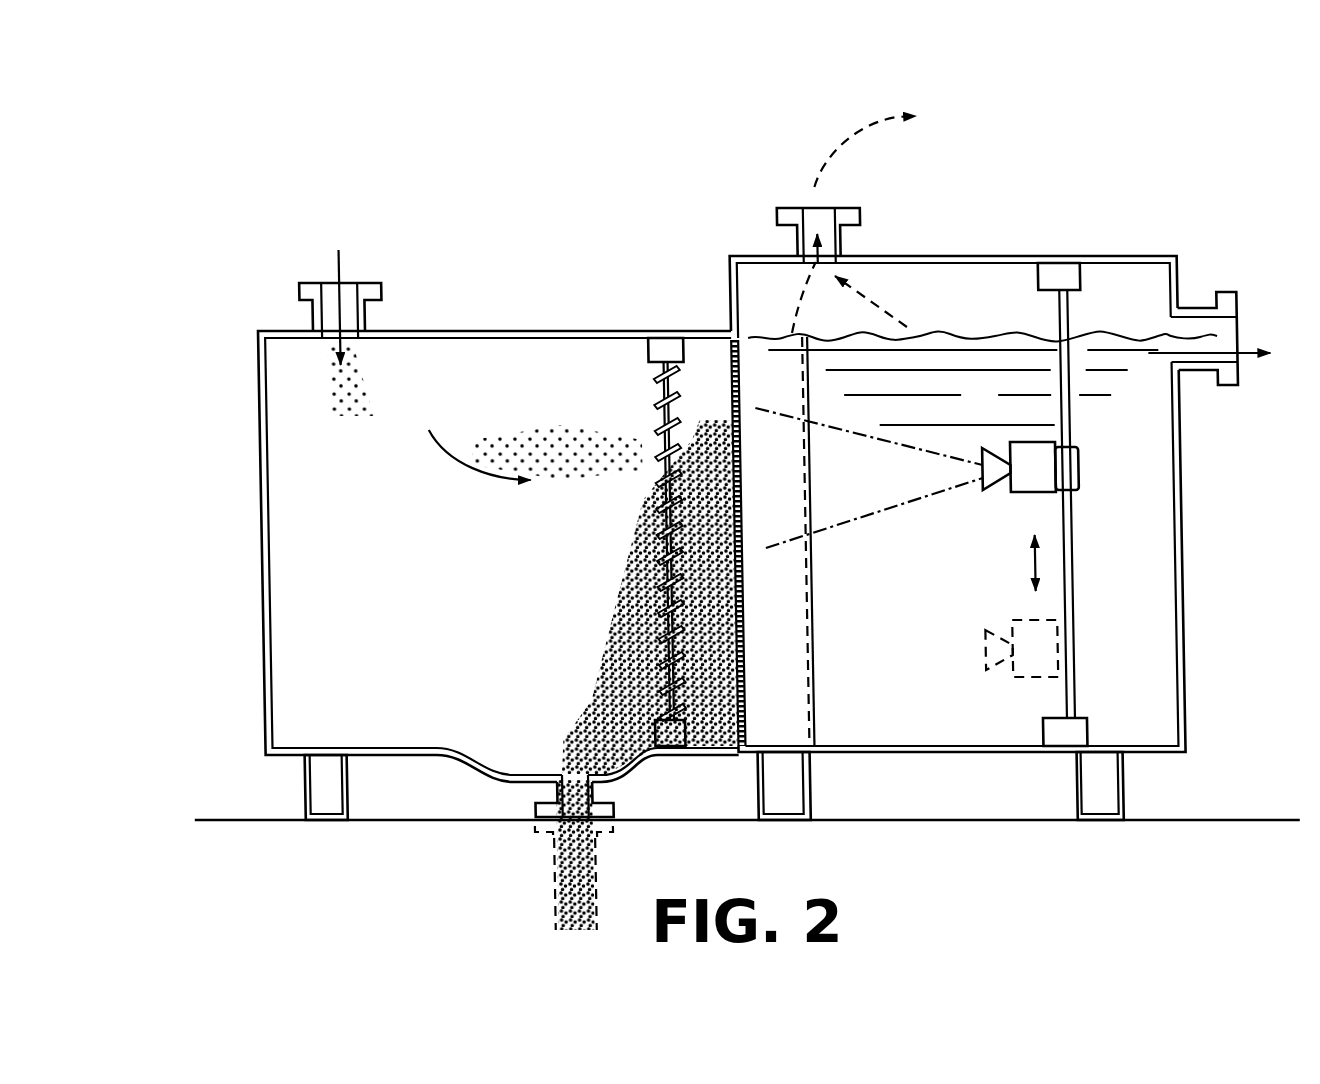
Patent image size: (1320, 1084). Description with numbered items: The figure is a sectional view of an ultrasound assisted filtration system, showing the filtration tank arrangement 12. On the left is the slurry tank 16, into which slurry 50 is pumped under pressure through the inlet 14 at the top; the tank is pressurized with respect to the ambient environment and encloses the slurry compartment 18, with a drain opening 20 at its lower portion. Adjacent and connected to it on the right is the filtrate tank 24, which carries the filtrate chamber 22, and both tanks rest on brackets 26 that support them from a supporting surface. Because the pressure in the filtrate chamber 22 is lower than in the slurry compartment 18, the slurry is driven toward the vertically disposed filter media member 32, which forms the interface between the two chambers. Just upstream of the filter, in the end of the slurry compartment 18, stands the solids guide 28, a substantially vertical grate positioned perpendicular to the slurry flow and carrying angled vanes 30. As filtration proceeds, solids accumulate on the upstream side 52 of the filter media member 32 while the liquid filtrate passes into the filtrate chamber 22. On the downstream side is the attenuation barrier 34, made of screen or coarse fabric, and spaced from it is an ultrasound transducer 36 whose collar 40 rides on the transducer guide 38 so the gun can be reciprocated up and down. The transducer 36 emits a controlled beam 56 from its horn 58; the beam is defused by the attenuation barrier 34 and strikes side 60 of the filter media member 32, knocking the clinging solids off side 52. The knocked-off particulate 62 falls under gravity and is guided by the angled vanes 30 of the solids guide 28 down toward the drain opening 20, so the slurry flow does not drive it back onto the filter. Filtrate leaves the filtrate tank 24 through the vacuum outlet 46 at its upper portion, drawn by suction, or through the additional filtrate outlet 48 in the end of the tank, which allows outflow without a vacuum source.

The filtration tank arrangement 12 is at (1028, 237).
The inlet 14 is at (297, 298).
The slurry tank 16 is at (256, 432).
The slurry compartment 18 is at (332, 690).
The drain opening 20 is at (534, 792).
The filtrate chamber 22 is at (921, 711).
The filtrate tank 24 is at (1178, 670).
The brackets 26 is at (339, 768).
The solids guide 28 is at (626, 401).
The vanes 30 is at (683, 702).
The filter media member 32 is at (730, 352).
The attenuation barrier 34 is at (810, 721).
The ultrasound transducer 36 is at (1030, 491).
The transducer guide 38 is at (1112, 557).
The collar 40 is at (1074, 462).
The vacuum outlet 46 is at (766, 212).
The filtrate outlet 48 is at (1248, 296).
The slurry 50 is at (351, 405).
The side of filter member 52 is at (716, 628).
The controlled beam 56 is at (882, 524).
The horns 58 is at (975, 468).
The side of filter media member 60 is at (832, 712).
The knocked-off particulate 62 is at (708, 466).